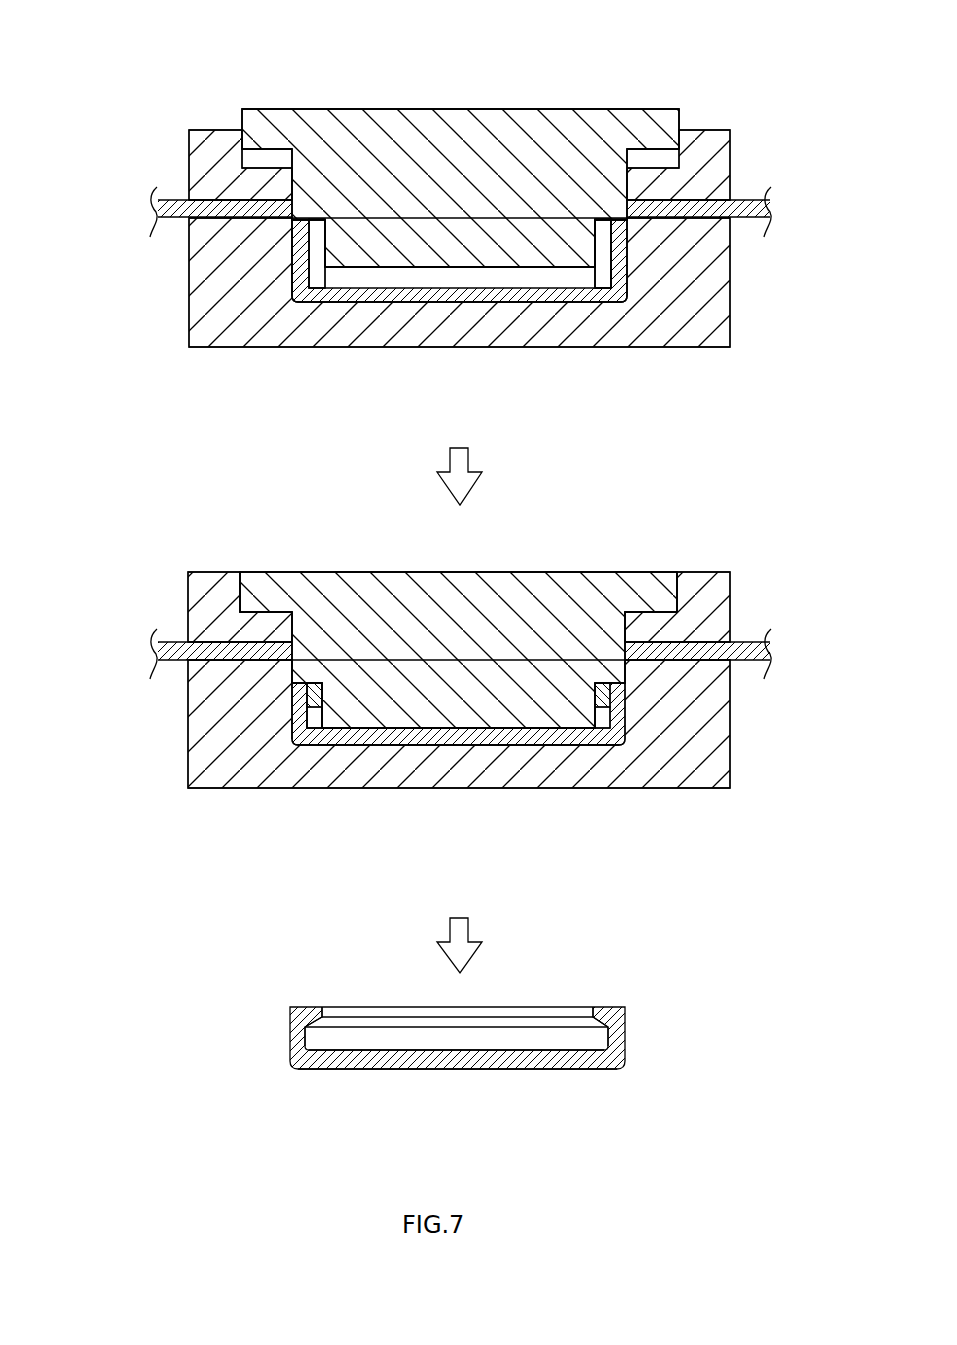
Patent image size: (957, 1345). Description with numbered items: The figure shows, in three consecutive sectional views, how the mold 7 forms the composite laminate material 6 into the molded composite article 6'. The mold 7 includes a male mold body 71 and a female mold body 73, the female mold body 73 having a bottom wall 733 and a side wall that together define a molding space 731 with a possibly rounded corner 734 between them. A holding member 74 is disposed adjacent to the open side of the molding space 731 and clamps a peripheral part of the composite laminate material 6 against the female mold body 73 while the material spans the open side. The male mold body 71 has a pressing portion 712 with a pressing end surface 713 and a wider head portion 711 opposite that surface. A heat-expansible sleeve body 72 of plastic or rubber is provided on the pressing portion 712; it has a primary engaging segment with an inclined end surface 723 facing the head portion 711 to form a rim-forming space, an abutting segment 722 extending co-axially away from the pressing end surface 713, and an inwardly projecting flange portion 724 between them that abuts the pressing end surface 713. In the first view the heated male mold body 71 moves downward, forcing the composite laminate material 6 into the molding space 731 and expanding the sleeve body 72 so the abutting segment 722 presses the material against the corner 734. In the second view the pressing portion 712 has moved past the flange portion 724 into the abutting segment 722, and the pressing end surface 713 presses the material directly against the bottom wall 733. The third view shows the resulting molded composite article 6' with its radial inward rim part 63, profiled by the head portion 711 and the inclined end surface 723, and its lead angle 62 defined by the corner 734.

The mold 7 is at (752, 118).
The male mold body 71 is at (630, 98).
The head portion 711 is at (320, 122).
The pressing portion 712 is at (410, 708).
The pressing end surface 713 is at (402, 267).
The sleeve body 72 is at (638, 270).
The abutting segment 722 is at (600, 290).
The inclined end surface 723 is at (318, 257).
The flange portion 724 is at (593, 270).
The female mold body 73 is at (235, 352).
The molding space 731 is at (468, 278).
The bottom wall 733 is at (485, 733).
The corner 734 is at (316, 303).
The holding member 74 is at (193, 155).
The composite laminate material 6 is at (415, 533).
The molded composite article 6' is at (457, 1096).
The lead angle 62 is at (612, 733).
The radial inward rim part 63 is at (627, 667).